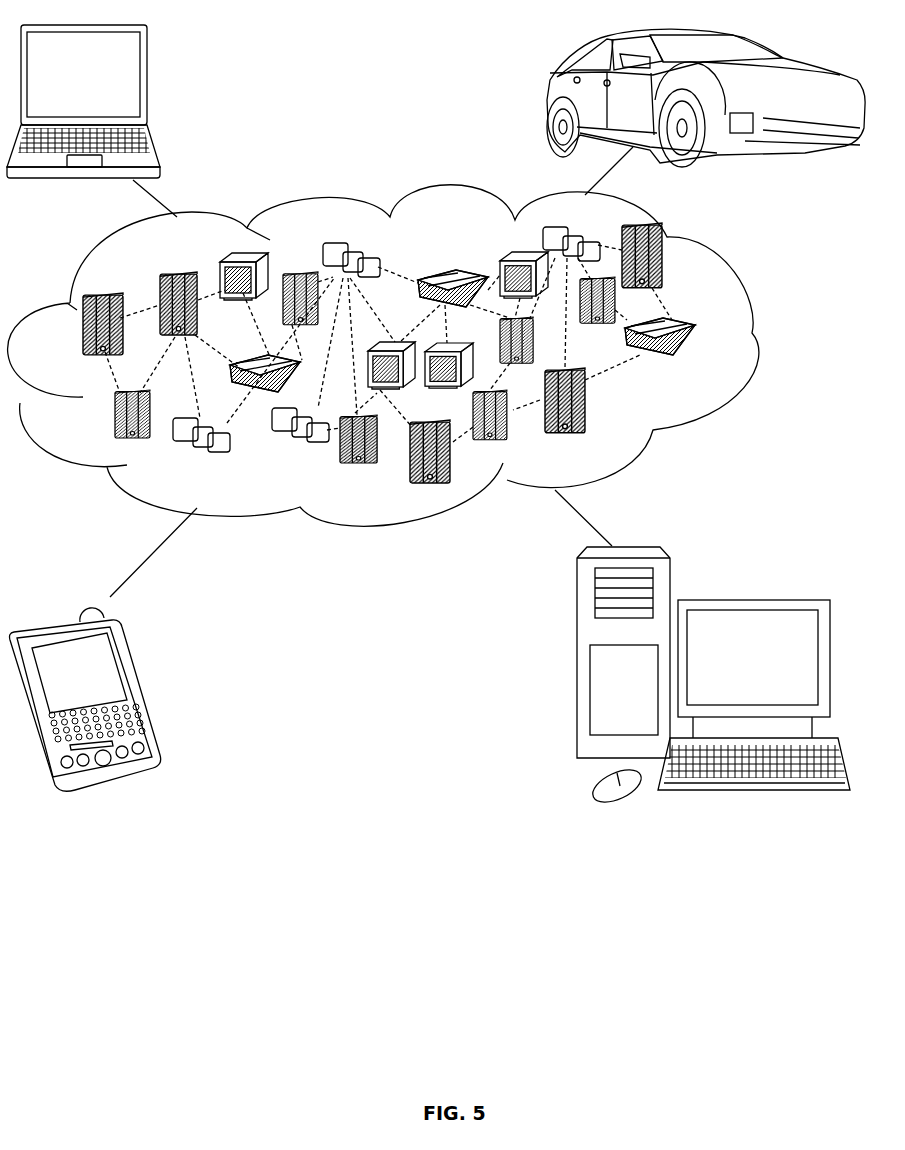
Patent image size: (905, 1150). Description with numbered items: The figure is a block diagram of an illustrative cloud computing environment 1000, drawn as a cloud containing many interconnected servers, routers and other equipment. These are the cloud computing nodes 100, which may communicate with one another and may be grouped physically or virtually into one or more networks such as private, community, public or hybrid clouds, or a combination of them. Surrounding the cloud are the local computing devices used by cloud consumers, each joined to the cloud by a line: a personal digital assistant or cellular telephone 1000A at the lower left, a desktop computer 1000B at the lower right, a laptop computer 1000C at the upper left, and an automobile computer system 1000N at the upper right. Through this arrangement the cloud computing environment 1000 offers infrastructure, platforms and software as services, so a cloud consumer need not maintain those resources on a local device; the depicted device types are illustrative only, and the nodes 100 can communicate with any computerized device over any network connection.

The cloud computing nodes 100 is at (418, 356).
The cloud computing environment 1000 is at (752, 333).
The personal digital assistant (PDA) or cellular telephone 1000A is at (138, 687).
The desktop computer 1000B is at (750, 598).
The laptop computer 1000C is at (148, 82).
The automobile computer system 1000N is at (550, 100).